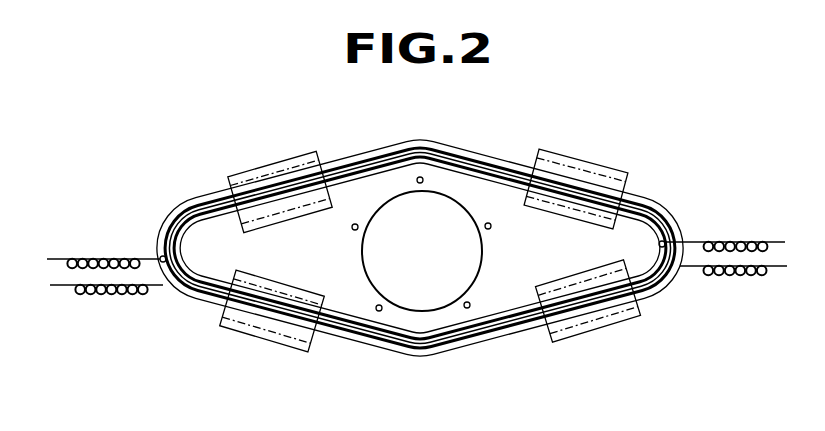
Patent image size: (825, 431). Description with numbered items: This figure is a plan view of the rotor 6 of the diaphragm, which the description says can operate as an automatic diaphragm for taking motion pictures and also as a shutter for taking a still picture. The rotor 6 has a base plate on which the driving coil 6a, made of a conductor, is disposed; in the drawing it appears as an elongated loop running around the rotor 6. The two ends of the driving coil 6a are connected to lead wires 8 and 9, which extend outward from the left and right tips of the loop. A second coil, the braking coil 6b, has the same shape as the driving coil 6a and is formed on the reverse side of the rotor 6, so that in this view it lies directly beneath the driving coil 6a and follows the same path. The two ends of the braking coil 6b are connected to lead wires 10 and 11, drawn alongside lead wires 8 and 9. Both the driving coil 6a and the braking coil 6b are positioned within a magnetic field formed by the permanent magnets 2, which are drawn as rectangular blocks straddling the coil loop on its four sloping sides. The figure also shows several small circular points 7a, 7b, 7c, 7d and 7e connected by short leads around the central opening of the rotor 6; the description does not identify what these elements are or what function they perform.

The permanent magnets 2 is at (262, 232).
The rotor 6 is at (503, 203).
The driving coil 6a is at (371, 113).
The braking coil 6b is at (481, 350).
The tap terminal 7a is at (423, 180).
The tap terminal 7b is at (489, 229).
The tap terminal 7c is at (470, 305).
The tap terminal 7d is at (376, 308).
The tap terminal 7e is at (355, 230).
The lead wire 8 is at (60, 253).
The lead wire 9 is at (778, 236).
The lead wire 10 is at (63, 296).
The lead wire 11 is at (772, 272).